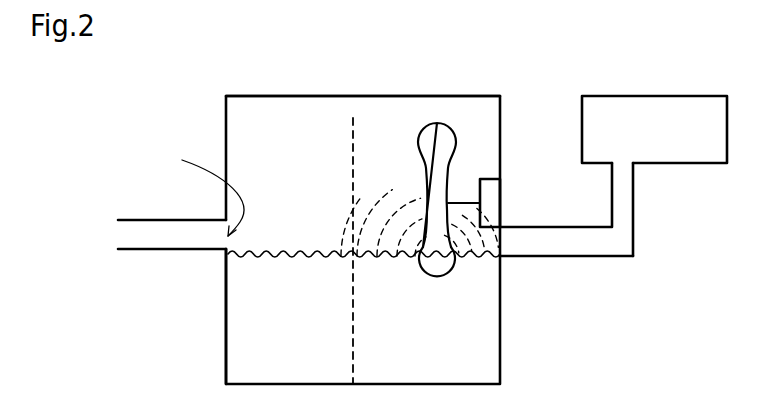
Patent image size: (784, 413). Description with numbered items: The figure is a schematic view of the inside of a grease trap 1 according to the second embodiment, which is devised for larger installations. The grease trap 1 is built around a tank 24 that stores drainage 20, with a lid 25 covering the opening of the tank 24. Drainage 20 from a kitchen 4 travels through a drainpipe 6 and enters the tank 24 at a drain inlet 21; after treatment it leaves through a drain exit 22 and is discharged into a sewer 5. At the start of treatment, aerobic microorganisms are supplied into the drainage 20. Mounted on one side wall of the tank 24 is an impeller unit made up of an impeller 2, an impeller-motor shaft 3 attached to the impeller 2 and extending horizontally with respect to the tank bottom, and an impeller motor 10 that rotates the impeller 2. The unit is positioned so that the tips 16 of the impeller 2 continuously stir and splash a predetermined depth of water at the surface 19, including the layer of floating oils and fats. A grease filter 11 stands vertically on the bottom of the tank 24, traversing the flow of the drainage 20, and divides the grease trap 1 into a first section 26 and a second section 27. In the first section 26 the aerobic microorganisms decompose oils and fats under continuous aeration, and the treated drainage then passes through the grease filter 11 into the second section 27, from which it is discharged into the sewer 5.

The grease trap 1 is at (551, 67).
The impeller 2 is at (442, 122).
The impeller-motor shaft 3 is at (463, 200).
The kitchen 4 is at (672, 115).
The sewer 5 is at (162, 232).
The drainpipe 6 is at (620, 240).
The impeller motor 10 is at (490, 210).
The grease filter 11 is at (353, 147).
The tips of the impeller 16 is at (437, 282).
The surface 19 is at (257, 253).
The drainage 20 is at (492, 365).
The drain inlet 21 is at (502, 242).
The drain exit 22 is at (197, 184).
The tank 24 is at (226, 330).
The lid 25 is at (262, 96).
The first section 26 is at (412, 106).
The second section 27 is at (305, 128).